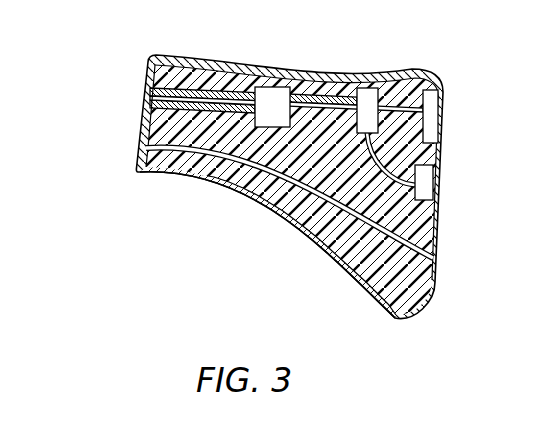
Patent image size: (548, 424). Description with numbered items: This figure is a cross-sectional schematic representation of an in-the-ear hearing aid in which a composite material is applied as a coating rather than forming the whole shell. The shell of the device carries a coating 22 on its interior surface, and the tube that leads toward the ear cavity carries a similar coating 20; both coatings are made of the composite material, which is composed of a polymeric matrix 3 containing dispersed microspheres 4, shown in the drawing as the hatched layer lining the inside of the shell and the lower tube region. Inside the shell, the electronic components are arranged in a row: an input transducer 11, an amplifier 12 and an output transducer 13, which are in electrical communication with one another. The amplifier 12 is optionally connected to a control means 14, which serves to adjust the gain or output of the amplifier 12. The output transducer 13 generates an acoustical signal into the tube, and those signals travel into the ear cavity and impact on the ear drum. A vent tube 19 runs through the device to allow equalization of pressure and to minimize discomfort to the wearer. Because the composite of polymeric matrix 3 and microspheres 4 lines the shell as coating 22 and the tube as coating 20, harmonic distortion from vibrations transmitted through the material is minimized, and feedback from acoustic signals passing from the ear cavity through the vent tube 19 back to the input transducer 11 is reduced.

The coating 22 is at (192, 52).
The coating 20 is at (150, 57).
The microspheres 4 is at (256, 66).
The output transducer 13 is at (282, 97).
The amplifier 12 is at (367, 100).
The input transducer 11 is at (432, 118).
The control means 14 is at (427, 183).
The vent tube 19 is at (272, 172).
The polymeric matrix 3 is at (323, 251).